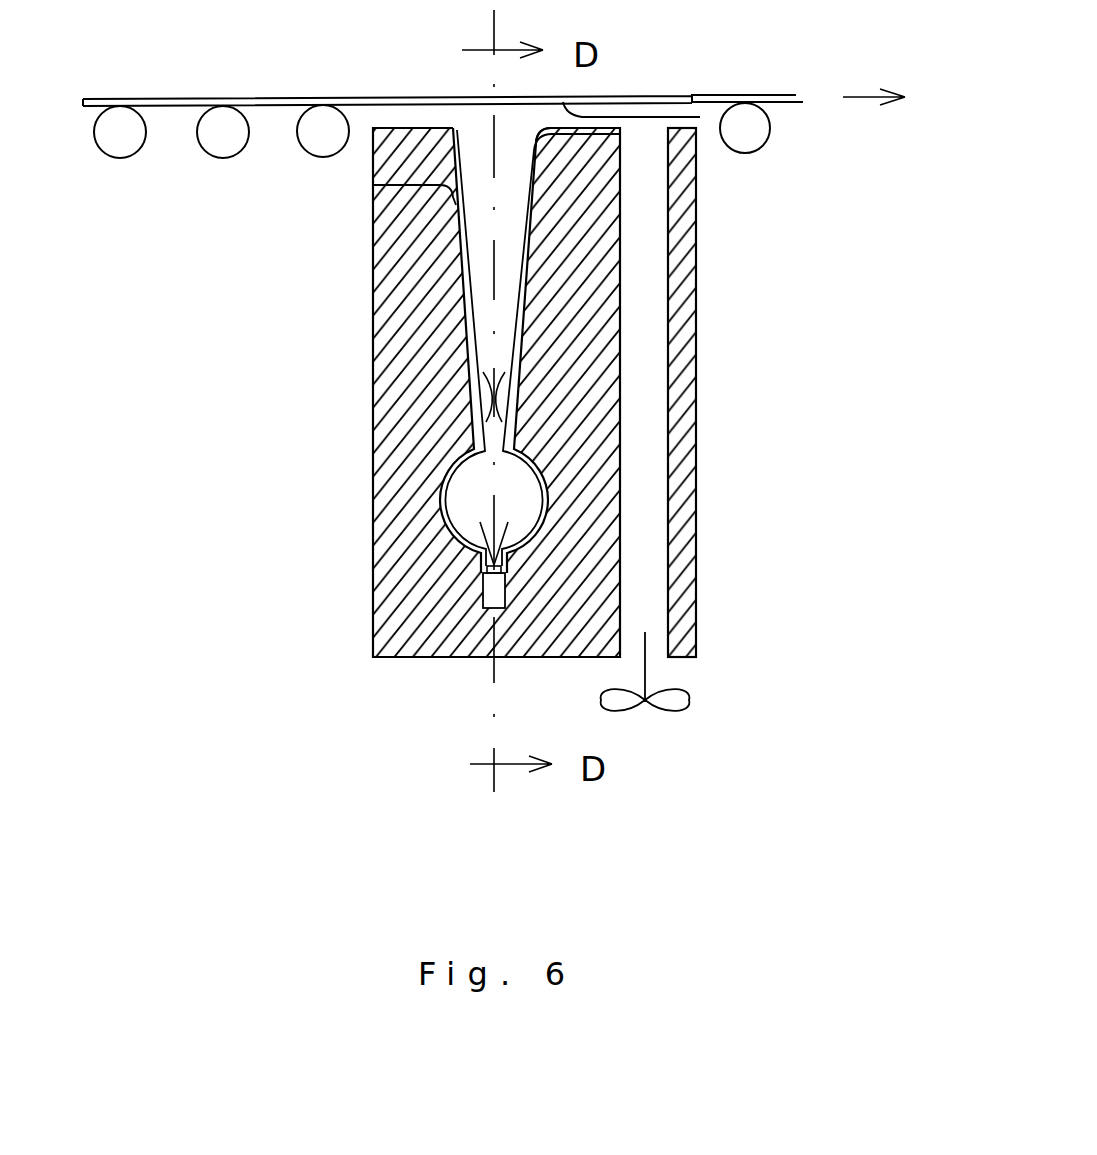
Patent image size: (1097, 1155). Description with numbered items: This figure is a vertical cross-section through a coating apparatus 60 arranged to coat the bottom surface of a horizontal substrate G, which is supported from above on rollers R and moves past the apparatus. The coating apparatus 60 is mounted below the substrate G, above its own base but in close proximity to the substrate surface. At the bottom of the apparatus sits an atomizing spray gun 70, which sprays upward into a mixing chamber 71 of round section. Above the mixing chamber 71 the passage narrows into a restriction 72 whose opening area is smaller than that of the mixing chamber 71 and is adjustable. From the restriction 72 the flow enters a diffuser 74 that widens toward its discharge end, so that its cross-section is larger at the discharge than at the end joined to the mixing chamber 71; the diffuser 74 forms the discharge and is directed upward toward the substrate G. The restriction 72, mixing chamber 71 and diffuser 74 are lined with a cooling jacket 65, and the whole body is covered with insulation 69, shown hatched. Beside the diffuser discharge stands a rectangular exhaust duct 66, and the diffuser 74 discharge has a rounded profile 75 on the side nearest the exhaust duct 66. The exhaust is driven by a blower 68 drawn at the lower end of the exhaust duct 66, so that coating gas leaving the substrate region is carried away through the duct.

The coating apparatus 60 is at (518, 408).
The cooling jacket 65 is at (373, 187).
The exhaust duct 66 is at (640, 470).
The blower 68 is at (700, 702).
The insulation 69 is at (390, 556).
The atomizing spray gun 70 is at (483, 592).
The mixing chamber 71 is at (477, 494).
The restriction 72 is at (485, 400).
The diffuser 74 is at (482, 224).
The rounded profile 75 is at (532, 138).
The rollers R is at (135, 158).
The substrate G is at (700, 117).